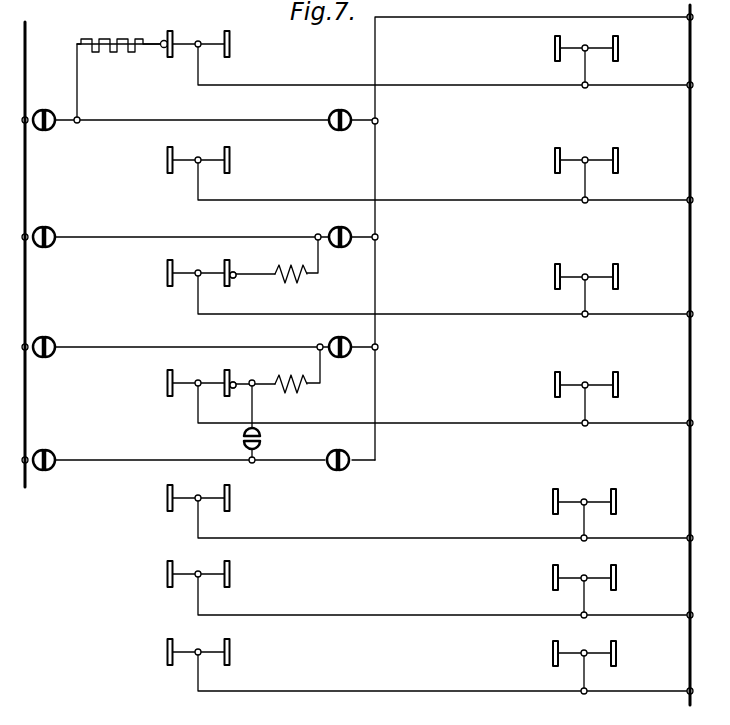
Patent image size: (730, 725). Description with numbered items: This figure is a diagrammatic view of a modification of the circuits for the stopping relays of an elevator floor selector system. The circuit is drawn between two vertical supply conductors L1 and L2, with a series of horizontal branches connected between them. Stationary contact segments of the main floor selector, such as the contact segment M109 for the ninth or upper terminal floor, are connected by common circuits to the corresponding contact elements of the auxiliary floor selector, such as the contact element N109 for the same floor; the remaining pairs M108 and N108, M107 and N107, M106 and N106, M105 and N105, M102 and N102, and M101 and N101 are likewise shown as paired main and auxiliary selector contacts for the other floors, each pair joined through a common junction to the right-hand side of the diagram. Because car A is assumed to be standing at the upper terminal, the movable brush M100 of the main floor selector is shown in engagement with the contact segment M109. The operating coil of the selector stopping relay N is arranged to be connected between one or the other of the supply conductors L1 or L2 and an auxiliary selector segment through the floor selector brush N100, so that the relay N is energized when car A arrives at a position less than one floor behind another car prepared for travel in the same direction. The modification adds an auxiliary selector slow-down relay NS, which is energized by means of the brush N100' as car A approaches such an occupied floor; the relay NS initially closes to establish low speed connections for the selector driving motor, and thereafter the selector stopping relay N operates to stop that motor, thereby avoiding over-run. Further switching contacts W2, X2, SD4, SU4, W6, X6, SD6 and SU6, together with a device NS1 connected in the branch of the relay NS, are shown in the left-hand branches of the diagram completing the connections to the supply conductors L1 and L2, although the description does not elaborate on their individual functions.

The supply conductor L1 is at (27, 42).
The supply conductor L2 is at (693, 46).
The contact segment M109 is at (167, 40).
The movable brush M100 is at (162, 47).
The contact element N109 is at (232, 40).
The switch contact W2 is at (57, 104).
The switch contact X2 is at (345, 106).
The relay M contact M108 is at (167, 160).
The relay N contact N108 is at (231, 160).
The switch contact SD4 is at (60, 218).
The switch contact SU4 is at (345, 221).
The relay M contact M107 is at (167, 273).
The relay N contact N107 is at (228, 269).
The selector stopping relay N is at (300, 270).
The floor selector brush N100 is at (254, 286).
The switch contact W6 is at (55, 345).
The switch contact X6 is at (340, 334).
The relay M contact M106 is at (167, 383).
The relay N contact N106 is at (230, 378).
The auxiliary selector slow-down relay NS is at (302, 380).
The brush N100' is at (227, 397).
The switch contact SD6 is at (56, 458).
The signal bell NS1 is at (259, 444).
The switch contact SU6 is at (355, 449).
The relay M contact M105 is at (167, 498).
The relay N contact N105 is at (231, 498).
The relay M contact M102 is at (167, 574).
The relay N contact N102 is at (231, 574).
The relay M contact M101 is at (167, 652).
The relay N contact N101 is at (231, 652).